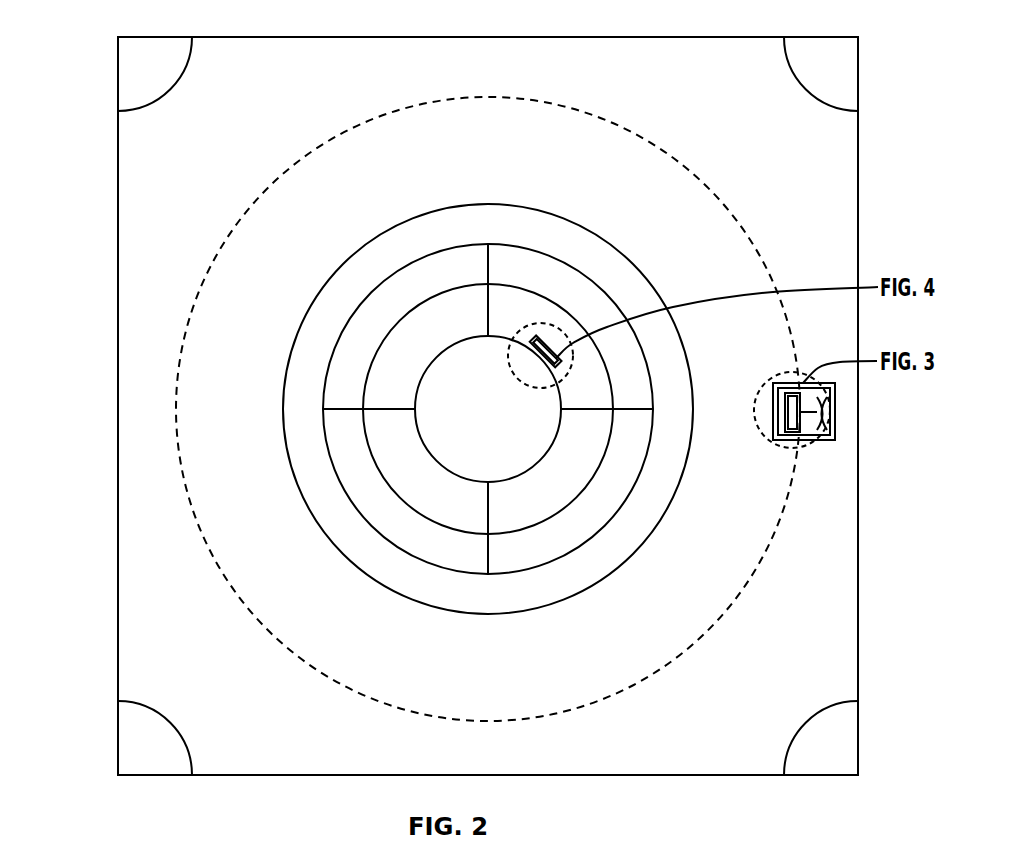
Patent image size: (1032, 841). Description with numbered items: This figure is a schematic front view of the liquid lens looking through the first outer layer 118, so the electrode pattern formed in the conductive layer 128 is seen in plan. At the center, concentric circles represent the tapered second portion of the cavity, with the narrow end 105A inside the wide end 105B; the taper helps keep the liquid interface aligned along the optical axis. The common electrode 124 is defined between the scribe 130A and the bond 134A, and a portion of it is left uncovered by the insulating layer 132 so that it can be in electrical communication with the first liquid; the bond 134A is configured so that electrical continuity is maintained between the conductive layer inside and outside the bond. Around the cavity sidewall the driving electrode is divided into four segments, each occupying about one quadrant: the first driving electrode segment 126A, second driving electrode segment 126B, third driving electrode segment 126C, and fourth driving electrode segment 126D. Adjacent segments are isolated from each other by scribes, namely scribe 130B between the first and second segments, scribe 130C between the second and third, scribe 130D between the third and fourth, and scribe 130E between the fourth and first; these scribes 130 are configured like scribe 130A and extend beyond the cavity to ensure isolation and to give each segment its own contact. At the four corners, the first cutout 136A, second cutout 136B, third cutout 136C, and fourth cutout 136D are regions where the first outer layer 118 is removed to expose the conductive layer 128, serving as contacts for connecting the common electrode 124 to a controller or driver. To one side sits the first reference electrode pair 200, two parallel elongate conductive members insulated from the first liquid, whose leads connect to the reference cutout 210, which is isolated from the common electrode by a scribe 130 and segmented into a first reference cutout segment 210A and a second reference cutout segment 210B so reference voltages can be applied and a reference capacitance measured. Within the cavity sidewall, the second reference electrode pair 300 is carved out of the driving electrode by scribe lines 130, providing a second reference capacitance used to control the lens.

The narrow end 105A is at (420, 443).
The wide end 105B is at (388, 484).
The first outer layer 118 is at (847, 173).
The common electrode 124 is at (330, 158).
The first driving electrode segment 126A is at (408, 325).
The second driving electrode segment 126B is at (525, 310).
The third driving electrode segment 126C is at (557, 480).
The fourth driving electrode segment 126D is at (418, 493).
The conductive layer 128 is at (278, 348).
The scribe 130 is at (835, 422).
The scribe 130A is at (348, 320).
The scribe 130B is at (483, 300).
The scribe 130C is at (587, 407).
The scribe 130D is at (488, 511).
The scribe 130E is at (387, 411).
The insulating layer 132 is at (305, 402).
The bond 134A is at (223, 240).
The first cutout 136A is at (172, 45).
The second cutout 136B is at (808, 45).
The third cutout 136C is at (813, 770).
The fourth cutout 136D is at (185, 770).
The first reference electrode pair 200 is at (776, 442).
The reference cutout 210 is at (835, 385).
The first reference cutout segment 210A is at (836, 438).
The second reference cutout segment 210B is at (835, 410).
The second reference electrode pair 300 is at (578, 360).